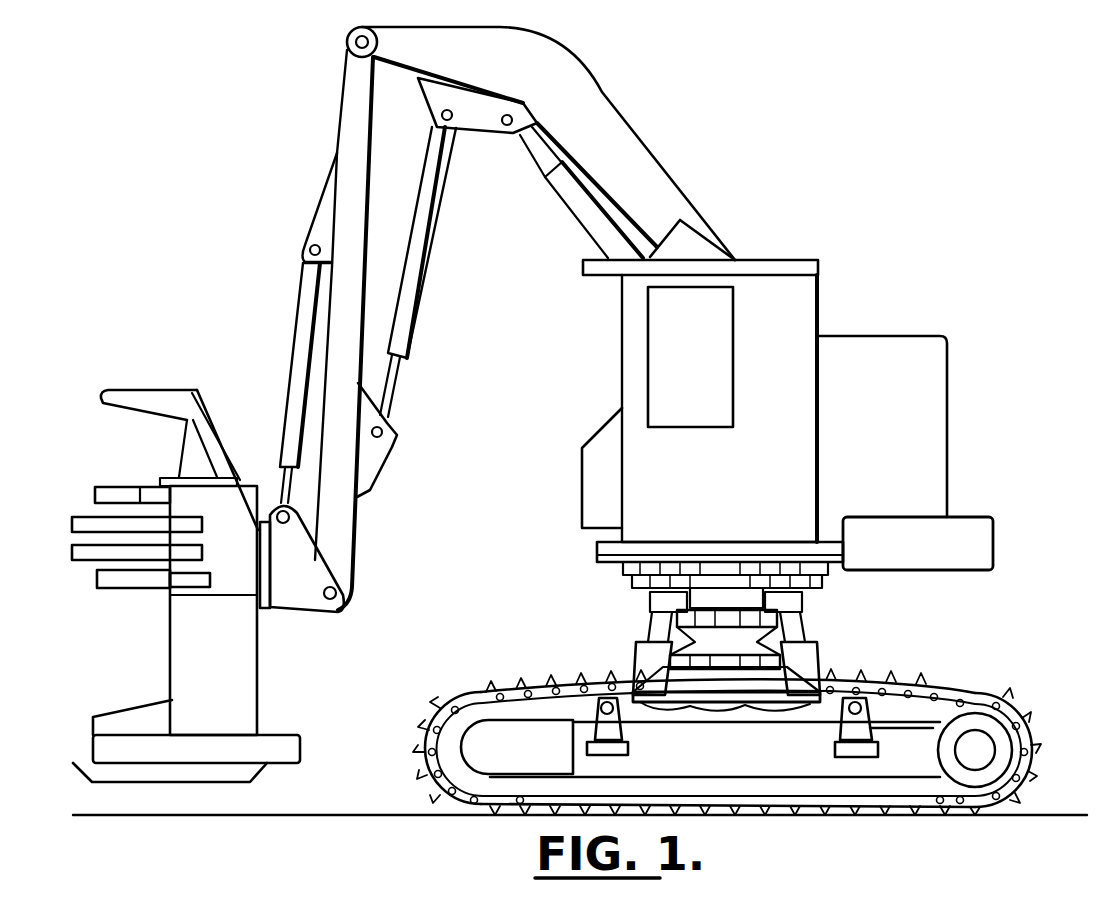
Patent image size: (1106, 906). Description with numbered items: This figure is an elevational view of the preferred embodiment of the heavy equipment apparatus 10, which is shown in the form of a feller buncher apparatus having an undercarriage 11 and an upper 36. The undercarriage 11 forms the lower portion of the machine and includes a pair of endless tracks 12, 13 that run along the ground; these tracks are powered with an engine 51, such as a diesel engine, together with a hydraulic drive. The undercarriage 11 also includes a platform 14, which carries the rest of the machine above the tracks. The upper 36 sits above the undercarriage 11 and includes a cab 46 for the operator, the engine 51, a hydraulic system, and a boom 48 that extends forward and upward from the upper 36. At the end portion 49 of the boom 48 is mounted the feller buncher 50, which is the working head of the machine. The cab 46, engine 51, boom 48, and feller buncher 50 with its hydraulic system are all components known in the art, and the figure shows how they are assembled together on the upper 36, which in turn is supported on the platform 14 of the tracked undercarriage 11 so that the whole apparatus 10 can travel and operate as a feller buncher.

The heavy equipment apparatus 10 is at (773, 137).
The undercarriage 11 is at (1013, 720).
The endless track 12 is at (500, 683).
The endless track 13 is at (727, 742).
The platform 14 is at (742, 759).
The upper 36 is at (810, 297).
The cab 46 is at (750, 493).
The boom 48 is at (607, 120).
The end portion 49 is at (313, 603).
The feller buncher 50 is at (232, 673).
The engine 51 is at (898, 451).